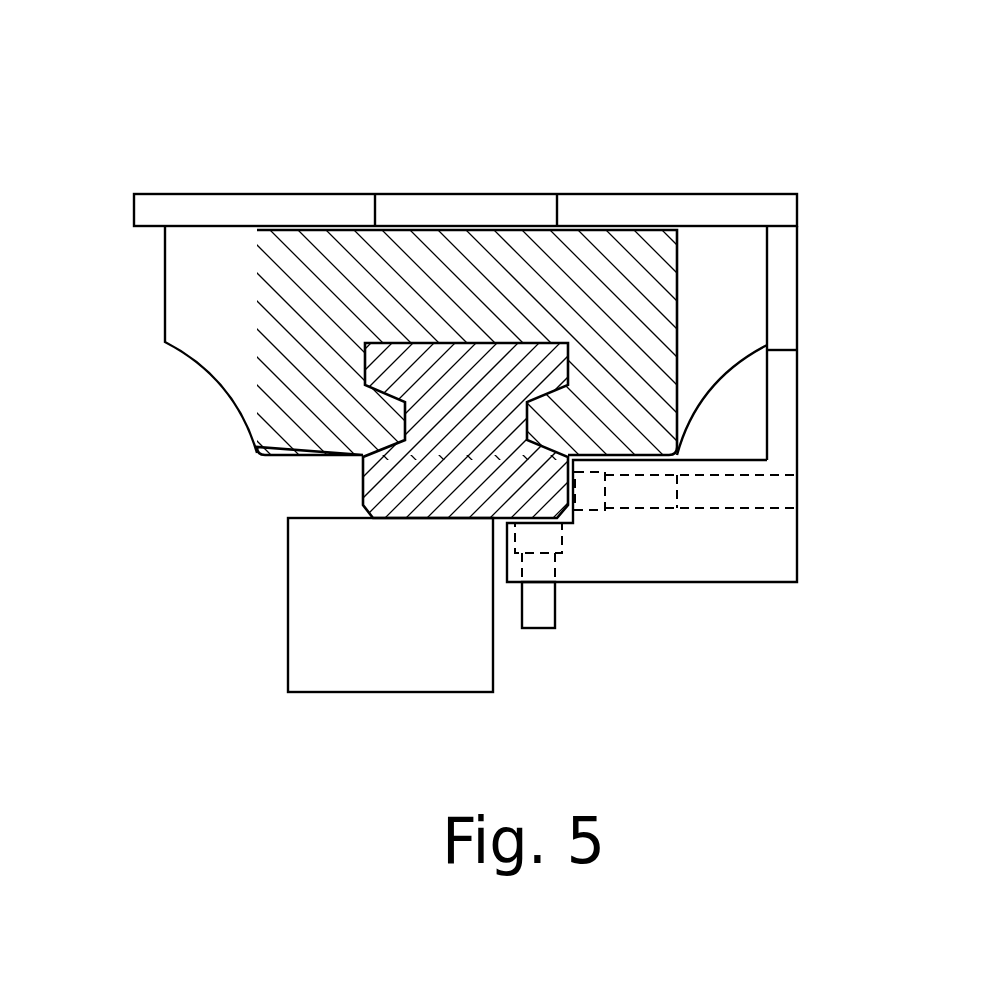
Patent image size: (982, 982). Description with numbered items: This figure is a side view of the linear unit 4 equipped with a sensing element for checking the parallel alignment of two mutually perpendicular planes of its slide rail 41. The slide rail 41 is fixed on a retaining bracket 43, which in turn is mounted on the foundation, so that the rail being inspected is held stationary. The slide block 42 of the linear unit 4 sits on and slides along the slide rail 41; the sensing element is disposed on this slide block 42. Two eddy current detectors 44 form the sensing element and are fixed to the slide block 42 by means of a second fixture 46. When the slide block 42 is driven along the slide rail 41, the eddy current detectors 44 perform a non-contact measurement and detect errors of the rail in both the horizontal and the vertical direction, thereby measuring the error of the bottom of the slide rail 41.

The linear unit 4 is at (477, 363).
The slide rail 41 is at (380, 493).
The slide block 42 is at (330, 250).
The retaining bracket 43 is at (303, 617).
The eddy current detector 44 is at (543, 607).
The second fixture 46 is at (782, 382).